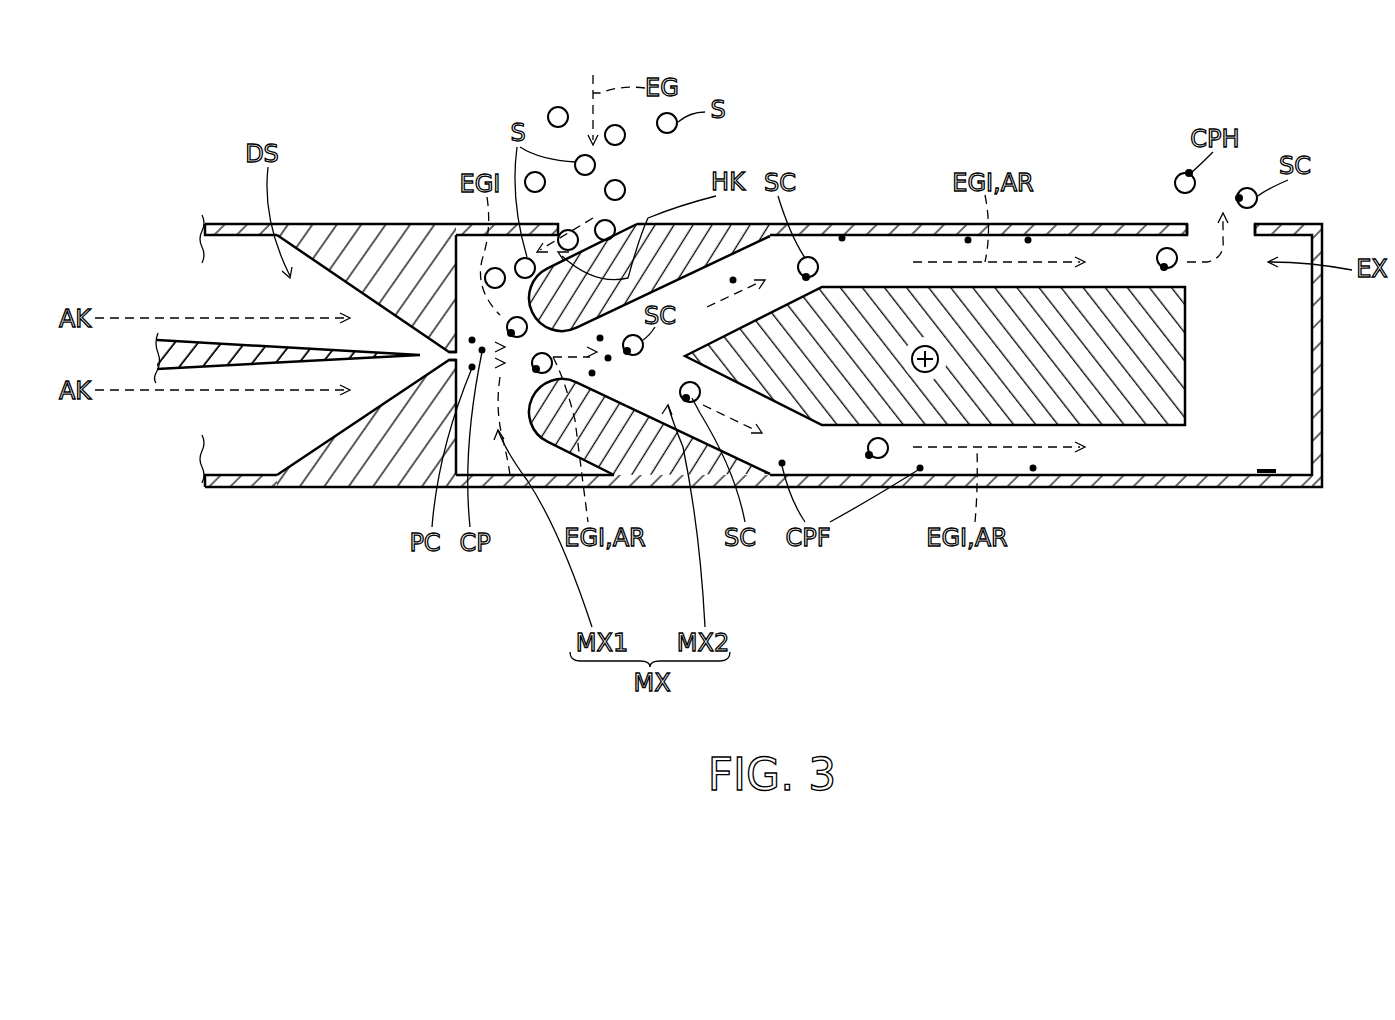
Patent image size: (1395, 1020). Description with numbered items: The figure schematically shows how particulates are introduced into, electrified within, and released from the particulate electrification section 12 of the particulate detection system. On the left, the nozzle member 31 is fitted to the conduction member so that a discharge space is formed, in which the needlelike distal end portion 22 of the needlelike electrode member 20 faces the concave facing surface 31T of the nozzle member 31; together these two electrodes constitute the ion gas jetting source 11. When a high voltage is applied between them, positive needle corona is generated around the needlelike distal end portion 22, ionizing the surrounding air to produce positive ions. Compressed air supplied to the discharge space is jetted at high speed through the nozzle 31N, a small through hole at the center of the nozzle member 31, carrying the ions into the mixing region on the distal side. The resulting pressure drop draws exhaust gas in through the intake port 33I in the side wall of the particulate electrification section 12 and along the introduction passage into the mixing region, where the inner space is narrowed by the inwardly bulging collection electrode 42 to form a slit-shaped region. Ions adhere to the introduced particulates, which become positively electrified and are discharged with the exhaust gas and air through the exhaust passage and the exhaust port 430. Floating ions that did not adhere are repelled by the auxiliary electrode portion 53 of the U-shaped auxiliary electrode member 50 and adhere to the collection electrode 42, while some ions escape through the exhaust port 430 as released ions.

The ion gas jetting source 11 is at (372, 322).
The particulate electrification section 12 is at (1128, 491).
The needlelike electrode member 20 is at (183, 358).
The needlelike distal end portion 22 is at (247, 352).
The nozzle member 31 is at (387, 232).
The nozzle 31N is at (458, 345).
The facing surface 31T is at (343, 430).
The intake port 33I is at (630, 226).
The collection electrode 42 is at (653, 470).
The auxiliary electrode portion 53 is at (875, 290).
The auxiliary electrode member 50 is at (935, 297).
The exhaust port 430 is at (1244, 232).